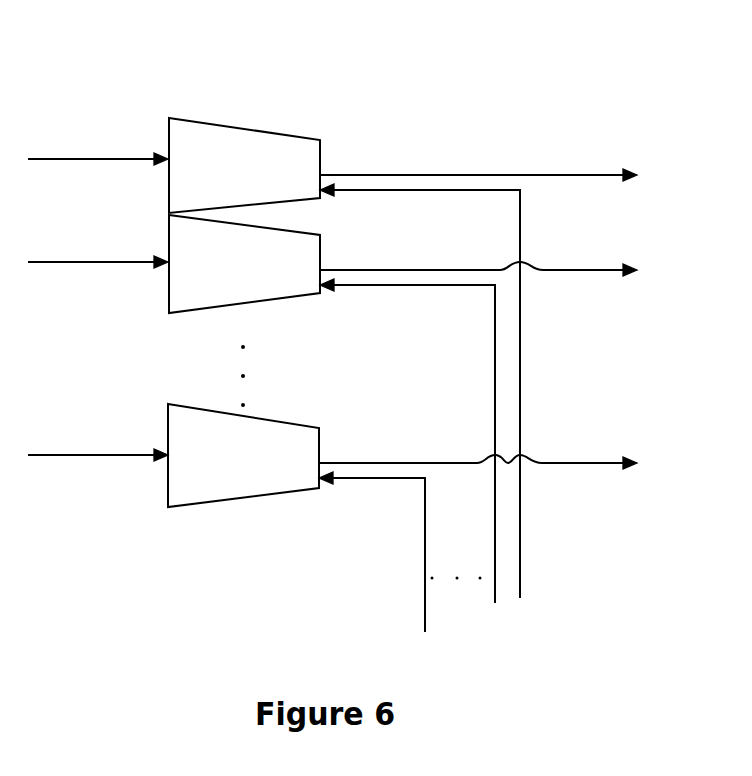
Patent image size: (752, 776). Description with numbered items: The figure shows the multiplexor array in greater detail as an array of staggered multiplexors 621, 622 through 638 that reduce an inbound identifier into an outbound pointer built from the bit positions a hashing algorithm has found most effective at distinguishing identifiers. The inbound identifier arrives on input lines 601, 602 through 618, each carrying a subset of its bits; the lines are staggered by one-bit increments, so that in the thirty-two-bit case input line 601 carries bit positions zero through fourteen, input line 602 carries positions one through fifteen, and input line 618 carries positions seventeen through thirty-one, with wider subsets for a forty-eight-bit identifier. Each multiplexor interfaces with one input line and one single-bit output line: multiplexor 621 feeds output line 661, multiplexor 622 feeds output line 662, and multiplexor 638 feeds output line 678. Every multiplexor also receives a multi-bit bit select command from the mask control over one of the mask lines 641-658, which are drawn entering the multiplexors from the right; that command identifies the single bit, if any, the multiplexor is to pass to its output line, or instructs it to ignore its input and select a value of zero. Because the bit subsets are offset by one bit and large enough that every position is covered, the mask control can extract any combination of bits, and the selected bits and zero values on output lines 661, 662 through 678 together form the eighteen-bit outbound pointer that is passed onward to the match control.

The input line 601 is at (75, 153).
The input line 602 is at (75, 257).
The input line 618 is at (88, 450).
The multiplexor 621 is at (240, 117).
The multiplexor 622 is at (262, 309).
The multiplexor 638 is at (250, 507).
The output line 661 is at (601, 162).
The output line 662 is at (601, 263).
The output line 678 is at (600, 456).
The mask lines 641-658 is at (537, 585).